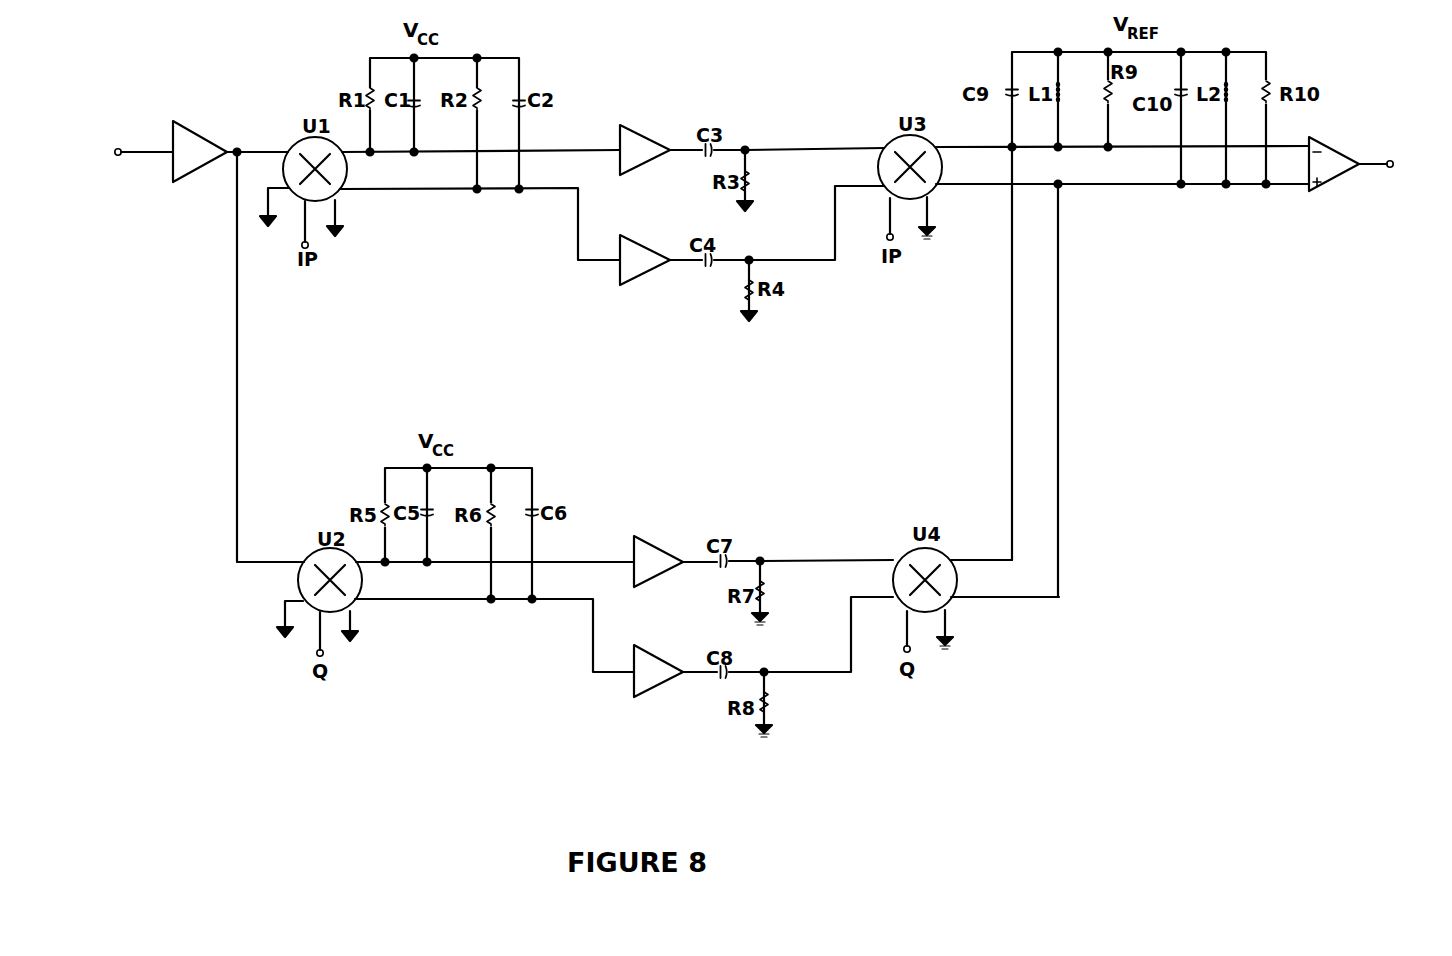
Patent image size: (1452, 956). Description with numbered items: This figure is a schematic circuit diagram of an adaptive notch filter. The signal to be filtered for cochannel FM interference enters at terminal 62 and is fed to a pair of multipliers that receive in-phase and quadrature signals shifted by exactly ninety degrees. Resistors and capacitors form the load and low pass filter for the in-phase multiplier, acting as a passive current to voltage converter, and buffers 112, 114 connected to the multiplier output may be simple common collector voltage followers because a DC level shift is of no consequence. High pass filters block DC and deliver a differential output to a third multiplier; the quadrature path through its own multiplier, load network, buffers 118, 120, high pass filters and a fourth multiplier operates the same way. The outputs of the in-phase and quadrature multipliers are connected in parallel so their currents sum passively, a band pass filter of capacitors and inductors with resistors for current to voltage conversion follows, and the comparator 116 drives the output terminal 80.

The terminal 62 is at (118, 149).
The buffer 112 is at (648, 140).
The buffer 114 is at (628, 284).
The comparator 116 is at (1326, 150).
The amplifier 118 is at (660, 549).
The amplifier 120 is at (652, 697).
The output terminal 80 is at (1390, 168).